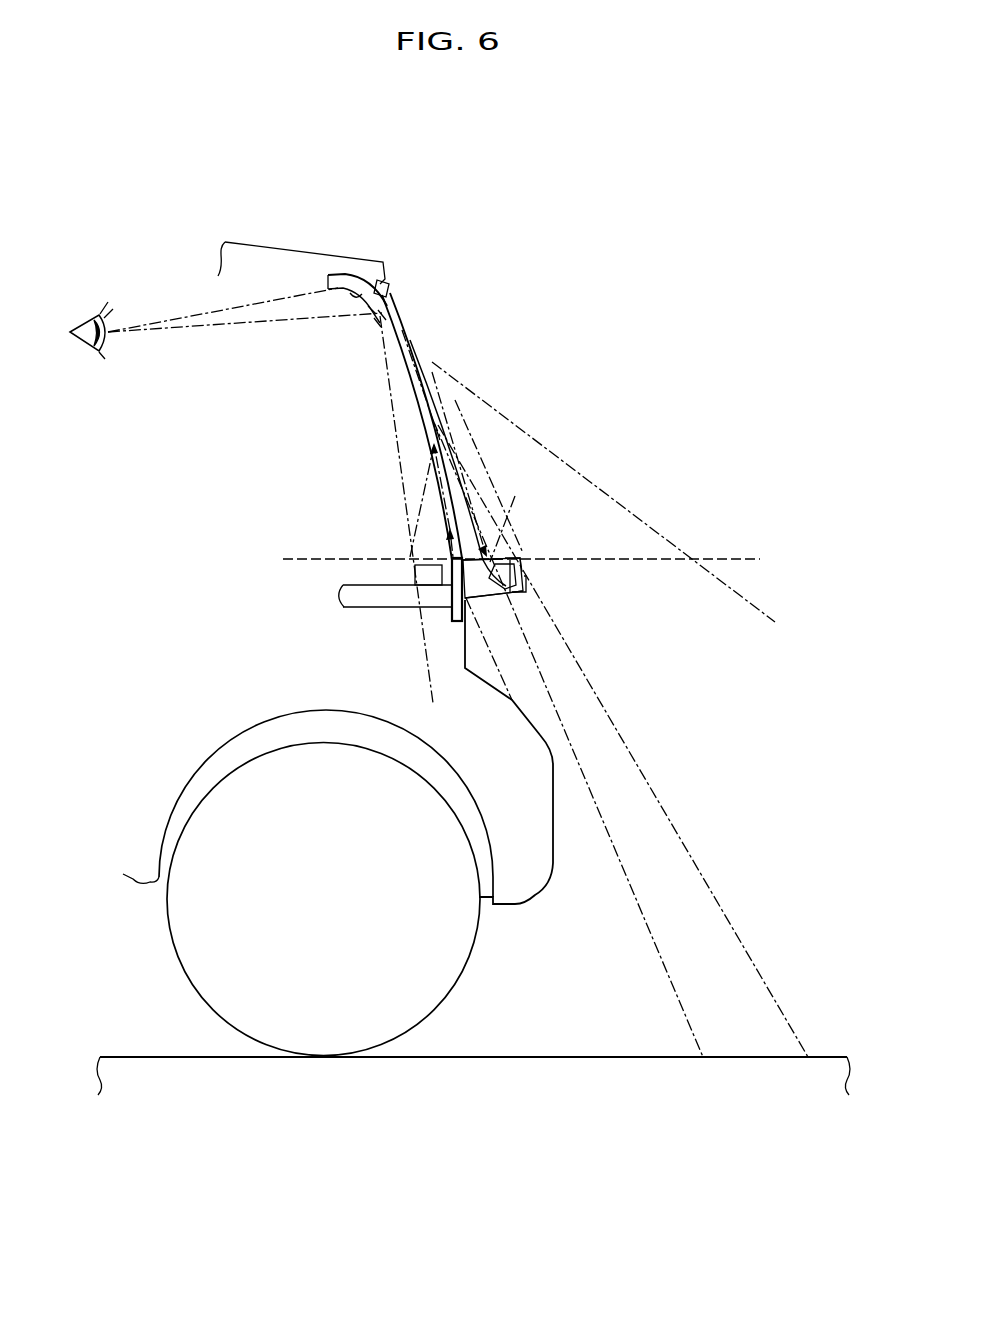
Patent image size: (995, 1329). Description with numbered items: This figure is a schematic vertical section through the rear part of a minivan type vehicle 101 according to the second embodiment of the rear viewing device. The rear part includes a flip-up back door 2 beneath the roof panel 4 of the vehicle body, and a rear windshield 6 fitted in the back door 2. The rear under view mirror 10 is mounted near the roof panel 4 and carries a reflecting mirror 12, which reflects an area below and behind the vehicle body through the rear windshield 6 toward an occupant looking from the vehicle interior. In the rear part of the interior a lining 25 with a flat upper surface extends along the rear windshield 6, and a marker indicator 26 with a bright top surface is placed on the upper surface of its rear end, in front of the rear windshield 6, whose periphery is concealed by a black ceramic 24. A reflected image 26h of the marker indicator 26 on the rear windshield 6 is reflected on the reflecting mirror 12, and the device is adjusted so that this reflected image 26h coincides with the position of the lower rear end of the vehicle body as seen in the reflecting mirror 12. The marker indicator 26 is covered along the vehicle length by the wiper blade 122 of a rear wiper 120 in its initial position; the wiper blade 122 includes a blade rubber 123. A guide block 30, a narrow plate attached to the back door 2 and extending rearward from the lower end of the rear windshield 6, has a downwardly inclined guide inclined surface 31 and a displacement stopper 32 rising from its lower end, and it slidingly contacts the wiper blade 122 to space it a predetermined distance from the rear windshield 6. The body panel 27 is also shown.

The roof panel 4 is at (285, 247).
The reflecting mirror 12 is at (353, 287).
The rear under view mirror 10 is at (387, 292).
The back door 2 is at (404, 329).
The rear windshield 6 is at (416, 352).
The vehicle 101 is at (521, 240).
The reflected image 26h is at (517, 514).
The marker indicator 26 is at (414, 566).
The lining 25 is at (373, 598).
The black ceramic 24 is at (452, 618).
The guide block 30 is at (488, 600).
The wiper blade 122 is at (527, 572).
The displacement stopper 32 is at (527, 583).
The blade rubber 123 is at (500, 598).
The rear wiper 120 is at (521, 556).
The guide inclined surface 31 is at (483, 556).
The body panel / fender 27 is at (555, 761).